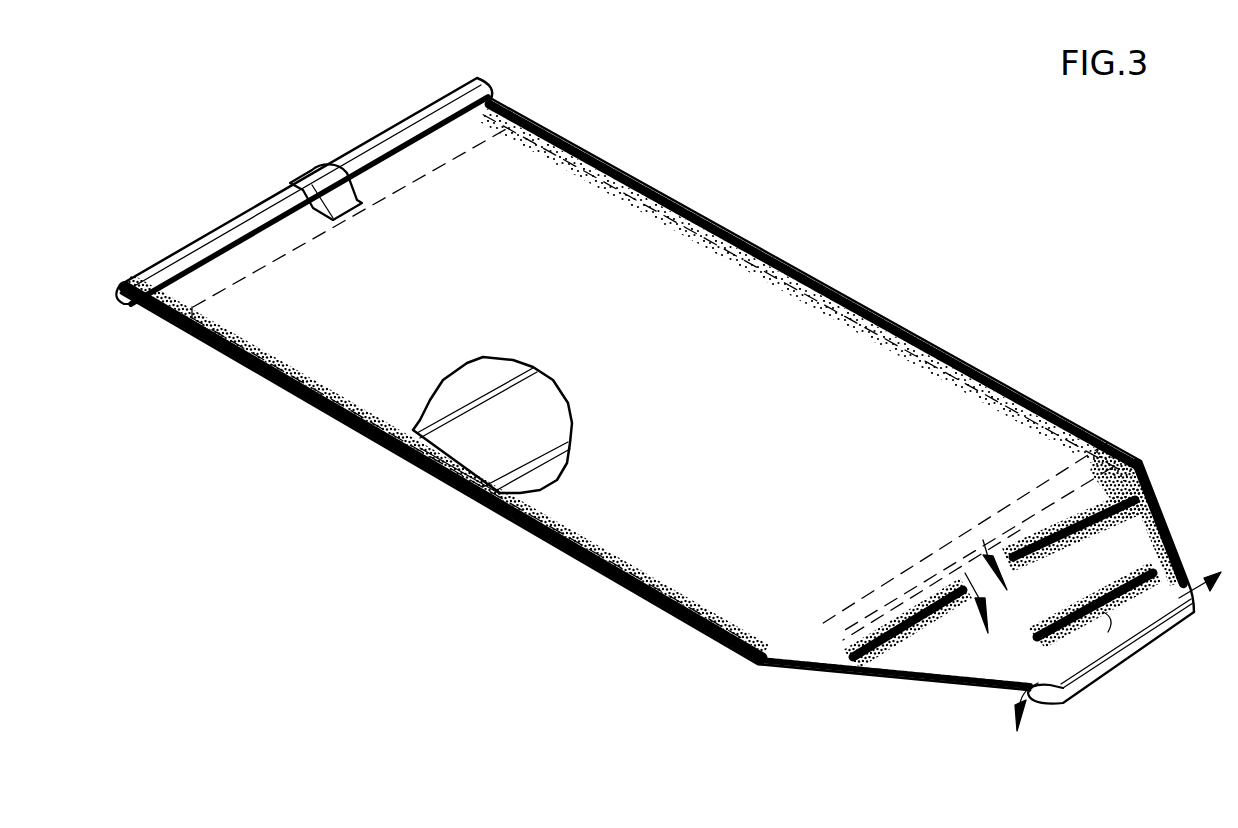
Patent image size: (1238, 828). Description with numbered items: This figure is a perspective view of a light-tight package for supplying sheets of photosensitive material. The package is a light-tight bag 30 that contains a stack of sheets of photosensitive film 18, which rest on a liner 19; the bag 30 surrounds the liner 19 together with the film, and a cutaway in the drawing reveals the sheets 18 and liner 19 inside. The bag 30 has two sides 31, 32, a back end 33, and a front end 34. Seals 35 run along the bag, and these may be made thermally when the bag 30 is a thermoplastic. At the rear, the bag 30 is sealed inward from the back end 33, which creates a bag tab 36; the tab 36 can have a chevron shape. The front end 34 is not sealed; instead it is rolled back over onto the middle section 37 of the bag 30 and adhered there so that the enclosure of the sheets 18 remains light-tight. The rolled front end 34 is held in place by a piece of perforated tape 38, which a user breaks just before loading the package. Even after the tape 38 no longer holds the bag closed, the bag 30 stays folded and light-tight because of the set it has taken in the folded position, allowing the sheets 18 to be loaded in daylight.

The sheets of photosensitive film 18 is at (498, 372).
The liner 19 is at (445, 478).
The light-tight bag 30 is at (744, 194).
The side of the bag 31 is at (888, 323).
The side of the bag 32 is at (548, 545).
The back end 33 is at (1136, 536).
The front end 34 is at (152, 313).
The seals 35 is at (827, 291).
The bag tab 36 is at (870, 676).
The middle section 37 is at (425, 237).
The perforated tape 38 is at (306, 177).